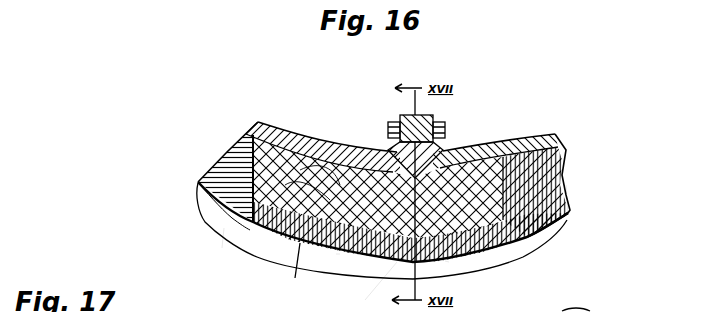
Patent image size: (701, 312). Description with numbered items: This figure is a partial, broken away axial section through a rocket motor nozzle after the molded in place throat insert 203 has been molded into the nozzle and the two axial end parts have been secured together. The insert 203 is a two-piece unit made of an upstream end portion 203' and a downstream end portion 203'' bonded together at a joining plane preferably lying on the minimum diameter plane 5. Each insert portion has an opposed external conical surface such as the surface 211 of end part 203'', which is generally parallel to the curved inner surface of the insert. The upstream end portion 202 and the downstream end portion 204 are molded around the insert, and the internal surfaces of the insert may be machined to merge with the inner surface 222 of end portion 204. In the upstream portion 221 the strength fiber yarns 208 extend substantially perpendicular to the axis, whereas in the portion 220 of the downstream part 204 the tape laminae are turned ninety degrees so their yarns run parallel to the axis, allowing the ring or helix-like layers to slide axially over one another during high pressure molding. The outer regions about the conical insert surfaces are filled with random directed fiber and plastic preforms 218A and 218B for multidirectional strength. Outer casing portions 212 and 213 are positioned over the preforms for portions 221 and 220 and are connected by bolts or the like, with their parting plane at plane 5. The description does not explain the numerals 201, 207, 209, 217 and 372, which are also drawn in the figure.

In FIG. 16, the plane 5 is at (443, 148).
In FIG. 16, the end edge of segment 201 is at (578, 222).
In FIG. 16, the end portion 202 is at (578, 200).
In FIG. 16, the insert 203 is at (382, 238).
In FIG. 16, the upstream end portion 203' is at (477, 286).
In FIG. 16, the downstream end portion 203'' is at (319, 282).
In FIG. 16, the end portion 204 is at (197, 183).
In FIG. 16, the bottom layer 207 is at (277, 241).
In FIG. 16, the strength fiber yarns 208 is at (210, 209).
In FIG. 16, the bottom hatched layer 209 is at (517, 240).
In FIG. 16, the external conical surface 211 is at (318, 185).
In FIG. 16, the outer casing portion 212 is at (538, 133).
In FIG. 16, the outer casing portion 213 is at (300, 130).
In FIG. 16, the bolt nut 217 is at (446, 127).
In FIG. 16, the random directed fiber preform 218A is at (488, 146).
In FIG. 16, the random directed fiber preform 218B is at (348, 185).
In FIG. 16, the portion 220 is at (214, 166).
In FIG. 16, the portion 221 is at (552, 152).
In FIG. 16, the surface 222 is at (223, 229).
In FIG. 17, the component of FIG. 17 372 is at (606, 305).